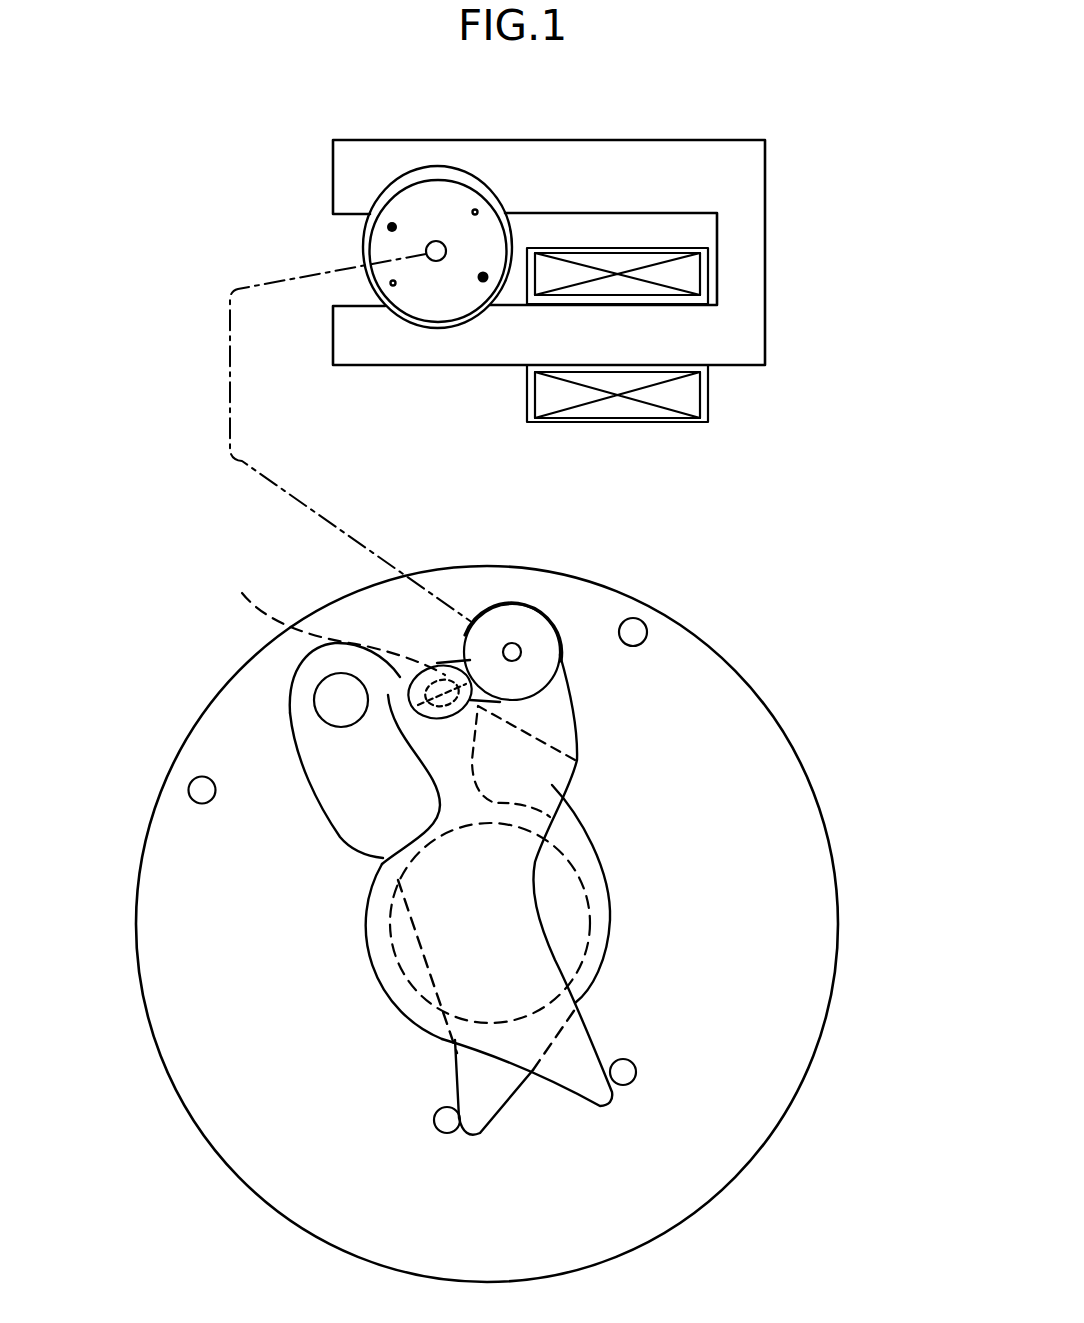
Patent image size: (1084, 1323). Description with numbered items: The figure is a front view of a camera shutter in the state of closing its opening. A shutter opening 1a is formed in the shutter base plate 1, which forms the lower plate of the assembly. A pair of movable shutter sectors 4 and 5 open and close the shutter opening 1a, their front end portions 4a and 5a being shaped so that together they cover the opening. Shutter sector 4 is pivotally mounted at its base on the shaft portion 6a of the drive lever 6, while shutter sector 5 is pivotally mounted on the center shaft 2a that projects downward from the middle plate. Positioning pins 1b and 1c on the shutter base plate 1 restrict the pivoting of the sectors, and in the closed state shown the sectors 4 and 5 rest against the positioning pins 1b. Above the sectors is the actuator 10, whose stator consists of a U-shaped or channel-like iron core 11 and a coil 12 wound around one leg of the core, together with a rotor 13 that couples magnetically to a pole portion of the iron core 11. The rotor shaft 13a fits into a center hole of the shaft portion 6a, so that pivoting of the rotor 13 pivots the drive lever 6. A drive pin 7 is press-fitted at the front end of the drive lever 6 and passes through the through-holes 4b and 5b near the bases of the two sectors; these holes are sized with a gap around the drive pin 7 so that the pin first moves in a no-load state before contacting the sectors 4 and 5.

The shutter base plate 1 is at (767, 805).
The shutter opening 1a is at (595, 942).
The positioning pins 1b is at (445, 1120).
The positioning pins 1c is at (198, 790).
The center shaft 2a is at (330, 697).
The shutter sector 4 is at (550, 787).
The front end portion 4a is at (382, 962).
The through-hole 4b is at (438, 678).
The shutter sector 5 is at (366, 824).
The front end portion 5a is at (606, 887).
The through-hole 5b is at (328, 626).
The drive lever 6 is at (547, 653).
The shaft portion 6a is at (538, 641).
The drive pin 7 is at (575, 760).
The actuator 10 is at (776, 206).
The iron core 11 is at (745, 343).
The coil 12 is at (668, 400).
The rotor 13 is at (437, 297).
The rotor shaft 13a is at (426, 250).